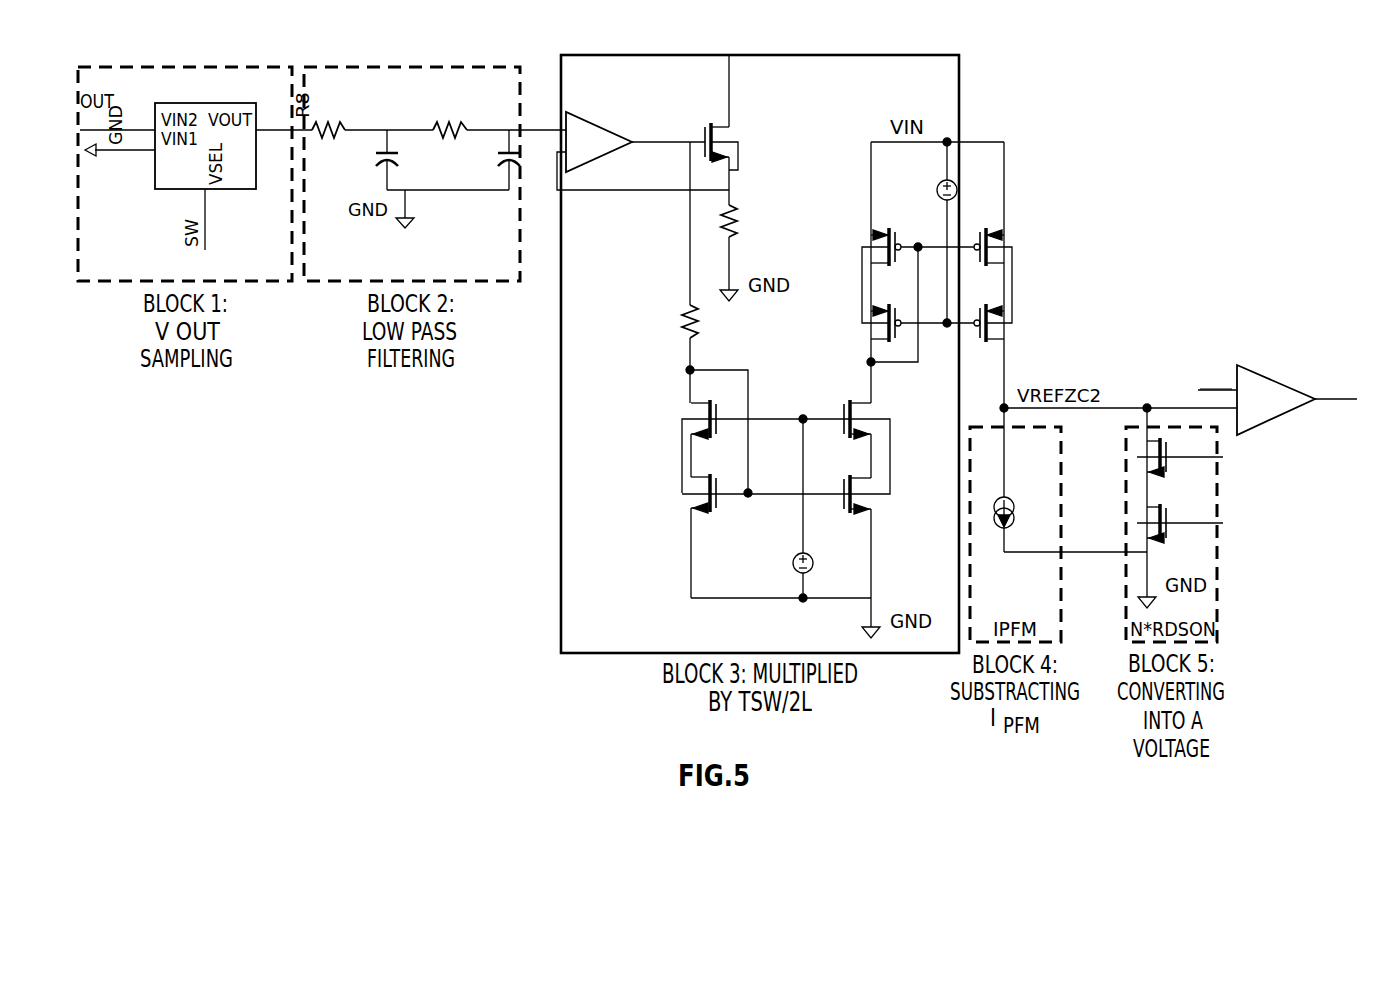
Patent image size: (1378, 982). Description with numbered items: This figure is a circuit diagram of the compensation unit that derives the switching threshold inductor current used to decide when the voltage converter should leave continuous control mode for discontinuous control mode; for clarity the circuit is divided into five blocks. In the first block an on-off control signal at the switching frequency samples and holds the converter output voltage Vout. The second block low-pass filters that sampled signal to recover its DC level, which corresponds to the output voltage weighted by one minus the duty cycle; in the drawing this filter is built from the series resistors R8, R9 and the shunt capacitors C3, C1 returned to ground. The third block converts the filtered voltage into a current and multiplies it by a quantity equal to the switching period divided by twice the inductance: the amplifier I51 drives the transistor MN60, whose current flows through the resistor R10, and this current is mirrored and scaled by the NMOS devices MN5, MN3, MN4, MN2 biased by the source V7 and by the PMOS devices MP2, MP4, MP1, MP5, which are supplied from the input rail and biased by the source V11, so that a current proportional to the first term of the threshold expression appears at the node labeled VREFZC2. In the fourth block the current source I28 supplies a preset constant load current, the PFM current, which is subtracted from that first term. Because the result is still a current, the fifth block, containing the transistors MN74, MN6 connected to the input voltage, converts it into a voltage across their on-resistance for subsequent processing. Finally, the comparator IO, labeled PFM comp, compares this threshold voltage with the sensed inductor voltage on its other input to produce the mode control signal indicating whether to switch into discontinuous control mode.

The resistor R8 is at (673, 321).
The resistor R9 is at (445, 115).
The capacitor C3 is at (401, 160).
The capacitor C1 is at (496, 160).
The amplifier I51 is at (599, 129).
The NMOS transistor MN60 is at (746, 130).
The resistor R10 is at (752, 253).
The NMOS transistor MN5 is at (680, 406).
The NMOS transistor MN3 is at (674, 481).
The NMOS transistor MN4 is at (885, 406).
The NMOS transistor MN2 is at (892, 481).
The voltage source V7 is at (818, 508).
The voltage source V11 is at (928, 232).
The PMOS transistor MP2 is at (860, 231).
The PMOS transistor MP4 is at (857, 307).
The PMOS transistor MP1 is at (1013, 231).
The PMOS transistor MP5 is at (1016, 307).
The current source I28 is at (1020, 480).
The NMOS transistor MN74 is at (1144, 445).
The NMOS transistor MN6 is at (1150, 510).
The PFM comparator IO is at (1277, 378).